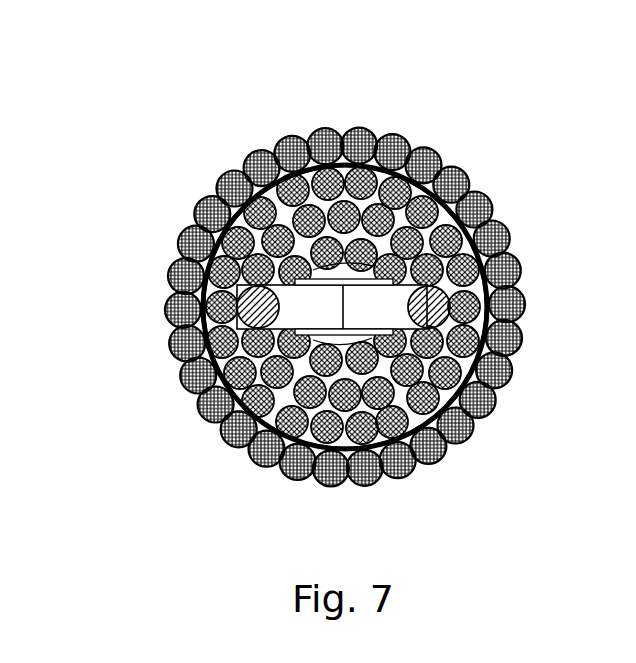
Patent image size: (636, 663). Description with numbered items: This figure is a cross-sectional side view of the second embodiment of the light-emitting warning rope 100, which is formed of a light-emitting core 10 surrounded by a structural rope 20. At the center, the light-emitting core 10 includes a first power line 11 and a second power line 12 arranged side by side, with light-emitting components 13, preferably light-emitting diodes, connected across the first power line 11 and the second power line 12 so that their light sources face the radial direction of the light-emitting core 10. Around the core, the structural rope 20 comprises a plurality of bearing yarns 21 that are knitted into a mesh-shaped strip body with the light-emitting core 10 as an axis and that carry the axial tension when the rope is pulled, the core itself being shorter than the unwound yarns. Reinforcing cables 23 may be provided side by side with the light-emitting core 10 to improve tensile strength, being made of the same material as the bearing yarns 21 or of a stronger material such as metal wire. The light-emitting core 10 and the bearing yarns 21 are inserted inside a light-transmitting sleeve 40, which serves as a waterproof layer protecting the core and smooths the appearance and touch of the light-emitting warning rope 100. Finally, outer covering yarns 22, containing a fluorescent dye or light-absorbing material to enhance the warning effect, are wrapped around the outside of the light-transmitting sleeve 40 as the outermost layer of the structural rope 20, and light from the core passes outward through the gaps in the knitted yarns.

The light-emitting warning rope 100 is at (320, 255).
The light-emitting core 10 is at (239, 305).
The first power line 11 is at (236, 291).
The second power line 12 is at (407, 308).
The light-emitting components 13 is at (313, 338).
The structural rope 20 is at (388, 299).
The bearing yarns 21 is at (441, 211).
The outer covering yarns 22 is at (431, 171).
The reinforcing cables 23 is at (411, 181).
The light-transmitting sleeve 40 is at (348, 163).